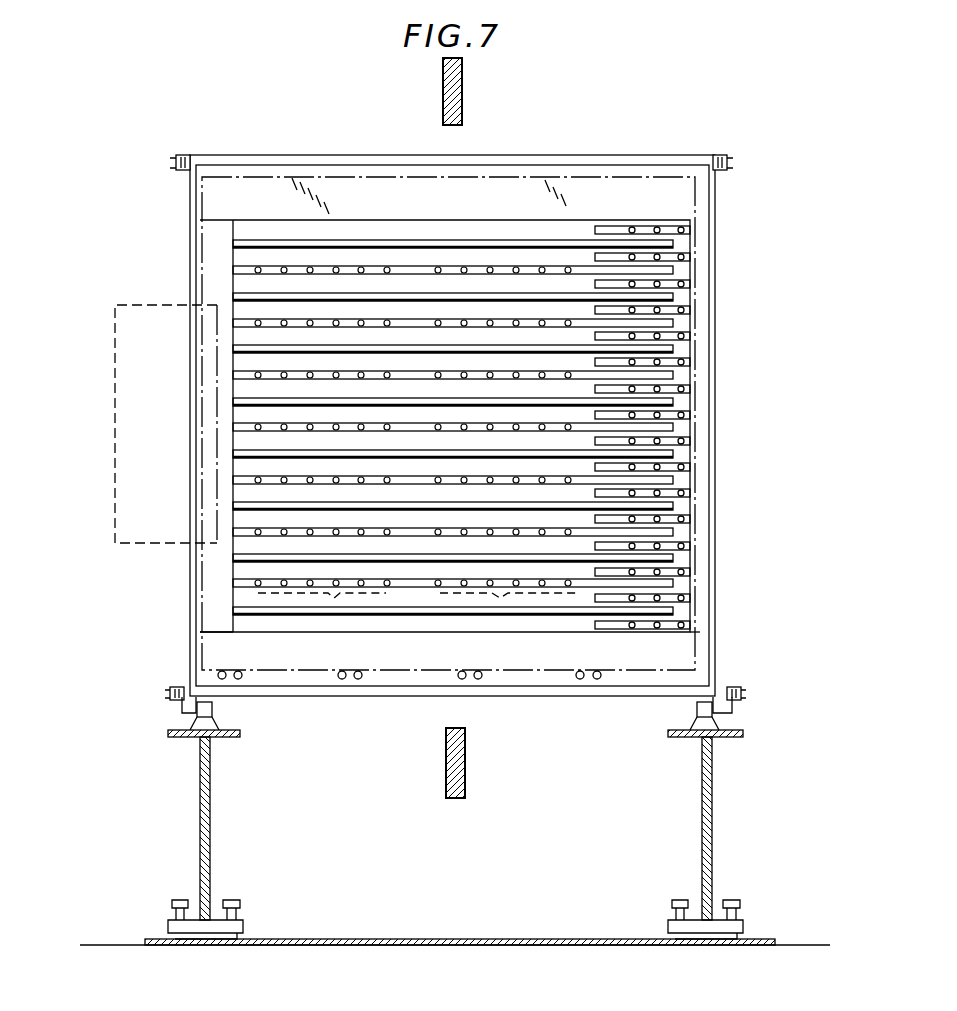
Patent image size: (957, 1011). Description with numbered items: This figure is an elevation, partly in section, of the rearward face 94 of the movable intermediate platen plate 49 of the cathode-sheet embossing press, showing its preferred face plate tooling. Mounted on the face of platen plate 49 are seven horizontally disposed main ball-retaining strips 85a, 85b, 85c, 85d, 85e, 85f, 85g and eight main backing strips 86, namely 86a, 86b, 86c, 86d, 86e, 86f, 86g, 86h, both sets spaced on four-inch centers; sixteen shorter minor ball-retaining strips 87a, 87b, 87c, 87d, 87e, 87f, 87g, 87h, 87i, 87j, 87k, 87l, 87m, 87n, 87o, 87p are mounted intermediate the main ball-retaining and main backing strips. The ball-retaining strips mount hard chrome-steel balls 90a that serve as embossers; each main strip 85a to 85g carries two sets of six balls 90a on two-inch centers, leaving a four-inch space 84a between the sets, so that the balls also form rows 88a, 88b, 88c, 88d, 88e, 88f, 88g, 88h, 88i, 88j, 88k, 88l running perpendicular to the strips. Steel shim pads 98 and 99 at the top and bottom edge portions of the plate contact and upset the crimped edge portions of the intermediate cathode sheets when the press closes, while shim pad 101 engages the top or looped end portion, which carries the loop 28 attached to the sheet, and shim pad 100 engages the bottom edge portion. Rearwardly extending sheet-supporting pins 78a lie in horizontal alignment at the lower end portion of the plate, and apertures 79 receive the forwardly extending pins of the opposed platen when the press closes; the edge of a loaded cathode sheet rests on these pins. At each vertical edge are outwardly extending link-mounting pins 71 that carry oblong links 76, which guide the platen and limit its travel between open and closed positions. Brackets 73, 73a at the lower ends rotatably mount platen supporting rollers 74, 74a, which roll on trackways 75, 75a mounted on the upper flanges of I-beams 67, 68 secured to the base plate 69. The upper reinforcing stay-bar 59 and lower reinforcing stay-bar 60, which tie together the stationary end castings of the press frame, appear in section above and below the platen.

The loop 28 is at (115, 410).
The intermediate platen plate 49 is at (647, 192).
The upper reinforcing stay-bar 59 is at (462, 86).
The lower reinforcing stay-bar 60 is at (465, 786).
The I-beam 67 is at (211, 850).
The I-beam 68 is at (702, 822).
The base plate 69 is at (428, 939).
The link-mounting pins 71 is at (176, 163).
The bracket 73 is at (183, 706).
The bracket 73a is at (732, 708).
The platen supporting roller 74 is at (213, 713).
The platen supporting roller 74a is at (697, 710).
The trackway 75 is at (190, 740).
The trackway 75a is at (716, 740).
The oblong links 76 is at (186, 155).
The rearwardly extending pins 78a is at (242, 678).
The apertures 79 is at (224, 680).
The space 84a is at (418, 588).
The main ball-retaining strip 85a is at (233, 583).
The main ball-retaining strip 85b is at (233, 532).
The main ball-retaining strip 85c is at (233, 480).
The main ball-retaining strip 85d is at (233, 427).
The main ball-retaining strip 85e is at (233, 375).
The main ball-retaining strip 85f is at (233, 323).
The main ball-retaining strip 85g is at (233, 270).
The main backing strips 86 is at (688, 612).
The main backing strip 86a is at (233, 611).
The main backing strip 86b is at (233, 558).
The main backing strip 86c is at (233, 506).
The main backing strip 86d is at (233, 454).
The main backing strip 86e is at (233, 402).
The main backing strip 86f is at (233, 349).
The main backing strip 86g is at (233, 297).
The main backing strip 86h is at (233, 244).
The minor ball-retaining strip 87a is at (690, 628).
The minor ball-retaining strip 87b is at (690, 598).
The minor ball-retaining strip 87c is at (690, 572).
The minor ball-retaining strip 87d is at (690, 546).
The minor ball-retaining strip 87e is at (690, 519).
The minor ball-retaining strip 87f is at (690, 493).
The minor ball-retaining strip 87g is at (690, 467).
The minor ball-retaining strip 87h is at (690, 441).
The minor ball-retaining strip 87i is at (690, 415).
The minor ball-retaining strip 87j is at (690, 389).
The minor ball-retaining strip 87k is at (690, 362).
The minor ball-retaining strip 87l is at (690, 336).
The minor ball-retaining strip 87m is at (690, 310).
The minor ball-retaining strip 87n is at (690, 284).
The minor ball-retaining strip 87o is at (690, 257).
The minor ball-retaining strip 87p is at (690, 230).
The row of embossers 88a is at (258, 266).
The row of embossers 88b is at (284, 266).
The row of embossers 88c is at (310, 266).
The row of embossers 88d is at (336, 266).
The row of embossers 88e is at (361, 266).
The row of embossers 88f is at (387, 266).
The row of embossers 88g is at (438, 266).
The row of embossers 88h is at (464, 266).
The row of embossers 88i is at (490, 266).
The row of embossers 88j is at (516, 266).
The row of embossers 88k is at (542, 266).
The row of embossers 88l is at (568, 266).
The balls 90a is at (681, 226).
The rearward face 94 is at (688, 200).
The steel shim pad 98 is at (603, 175).
The steel shim pad 99 is at (312, 682).
The steel shim pad 100 is at (704, 635).
The steel shim pad 101 is at (200, 632).